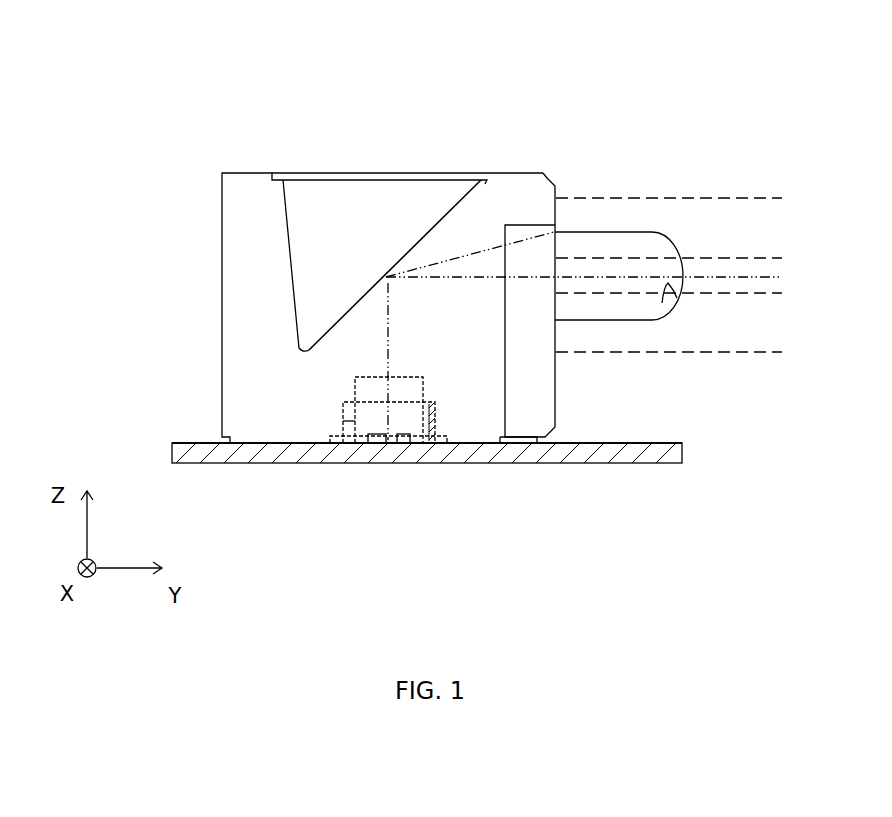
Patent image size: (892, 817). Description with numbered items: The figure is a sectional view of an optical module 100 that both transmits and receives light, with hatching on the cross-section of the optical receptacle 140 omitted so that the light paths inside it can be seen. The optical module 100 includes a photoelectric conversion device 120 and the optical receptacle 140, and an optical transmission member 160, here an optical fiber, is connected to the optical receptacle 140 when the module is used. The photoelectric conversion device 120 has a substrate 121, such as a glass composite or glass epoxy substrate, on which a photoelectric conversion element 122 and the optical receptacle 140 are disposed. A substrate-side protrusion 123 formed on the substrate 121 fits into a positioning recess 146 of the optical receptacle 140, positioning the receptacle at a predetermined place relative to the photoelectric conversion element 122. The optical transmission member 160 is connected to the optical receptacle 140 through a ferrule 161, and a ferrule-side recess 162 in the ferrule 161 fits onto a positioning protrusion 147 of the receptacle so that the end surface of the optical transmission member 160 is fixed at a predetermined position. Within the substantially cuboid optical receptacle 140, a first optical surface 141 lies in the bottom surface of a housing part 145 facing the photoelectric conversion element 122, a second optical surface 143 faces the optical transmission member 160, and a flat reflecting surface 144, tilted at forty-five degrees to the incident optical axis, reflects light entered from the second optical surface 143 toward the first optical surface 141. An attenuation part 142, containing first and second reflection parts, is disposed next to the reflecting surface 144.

The optical module 100 is at (645, 76).
The photoelectric conversion device 120 is at (520, 553).
The substrate 121 is at (471, 462).
The photoelectric conversion element 122 is at (398, 447).
The substrate-side protrusion 123 is at (347, 421).
The optical receptacle 140 is at (246, 188).
The first optical surface 141 is at (385, 440).
The attenuation part 142 is at (438, 231).
The second optical surface 143 is at (508, 288).
The reflecting surface 144 is at (395, 265).
The housing part 145 is at (400, 405).
The positioning recess 146 is at (367, 382).
The positioning protrusion 147 is at (655, 232).
The optical transmission member 160 is at (745, 293).
The ferrule 161 is at (720, 198).
The ferrule-side recess 162 is at (676, 303).